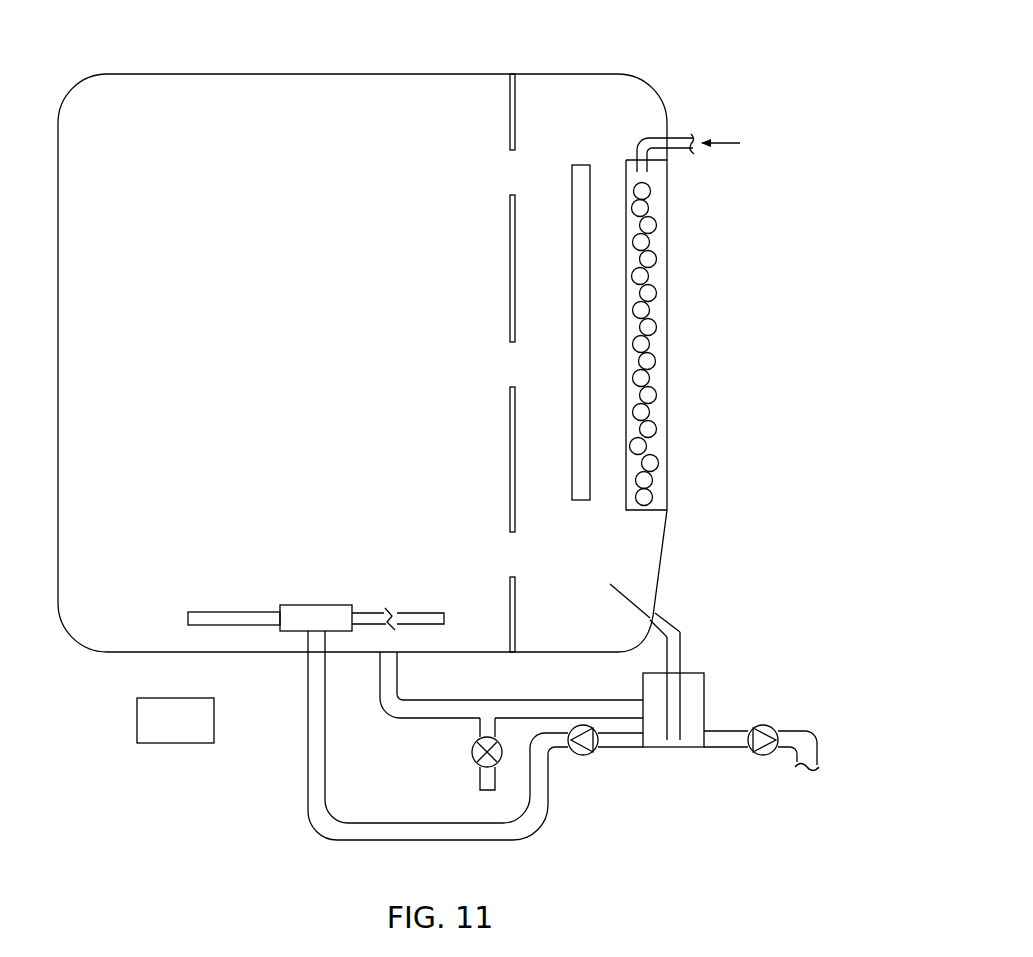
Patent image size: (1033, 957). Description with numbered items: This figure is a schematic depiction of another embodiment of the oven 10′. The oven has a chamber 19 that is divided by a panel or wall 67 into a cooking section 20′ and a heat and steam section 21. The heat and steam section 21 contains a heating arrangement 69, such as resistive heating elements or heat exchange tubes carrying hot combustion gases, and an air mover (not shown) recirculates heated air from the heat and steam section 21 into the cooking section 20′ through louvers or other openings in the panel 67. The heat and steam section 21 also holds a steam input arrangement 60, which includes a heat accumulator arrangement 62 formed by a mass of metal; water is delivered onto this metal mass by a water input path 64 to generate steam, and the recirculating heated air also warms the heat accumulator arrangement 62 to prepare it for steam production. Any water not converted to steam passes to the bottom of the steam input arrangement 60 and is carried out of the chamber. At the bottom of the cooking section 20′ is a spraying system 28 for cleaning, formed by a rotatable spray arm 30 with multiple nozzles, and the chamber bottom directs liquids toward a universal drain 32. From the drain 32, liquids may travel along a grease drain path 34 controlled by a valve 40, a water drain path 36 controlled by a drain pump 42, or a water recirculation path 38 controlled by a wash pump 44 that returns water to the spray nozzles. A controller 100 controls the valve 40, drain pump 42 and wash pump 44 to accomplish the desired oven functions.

The oven 10′ is at (675, 73).
The chamber 19 is at (377, 74).
The cooking section 20′ is at (380, 373).
The heat and steam section 21 is at (508, 363).
The panel or wall 67 is at (508, 445).
The heating arrangement 69 is at (578, 292).
The steam input arrangement 60 is at (603, 152).
The heat accumulator arrangement 62 is at (652, 220).
The water input path 64 is at (680, 138).
The drain pump 42 is at (765, 725).
The water drain path 36 is at (813, 730).
The spraying system 28 is at (319, 603).
The rotatable spray arm 30 is at (233, 612).
The drain 32 is at (389, 651).
The valve 40 is at (472, 752).
The grease drain path 34 is at (479, 778).
The water recirculation path 38 is at (550, 800).
The wash pump 44 is at (590, 752).
The controller 100 is at (158, 733).